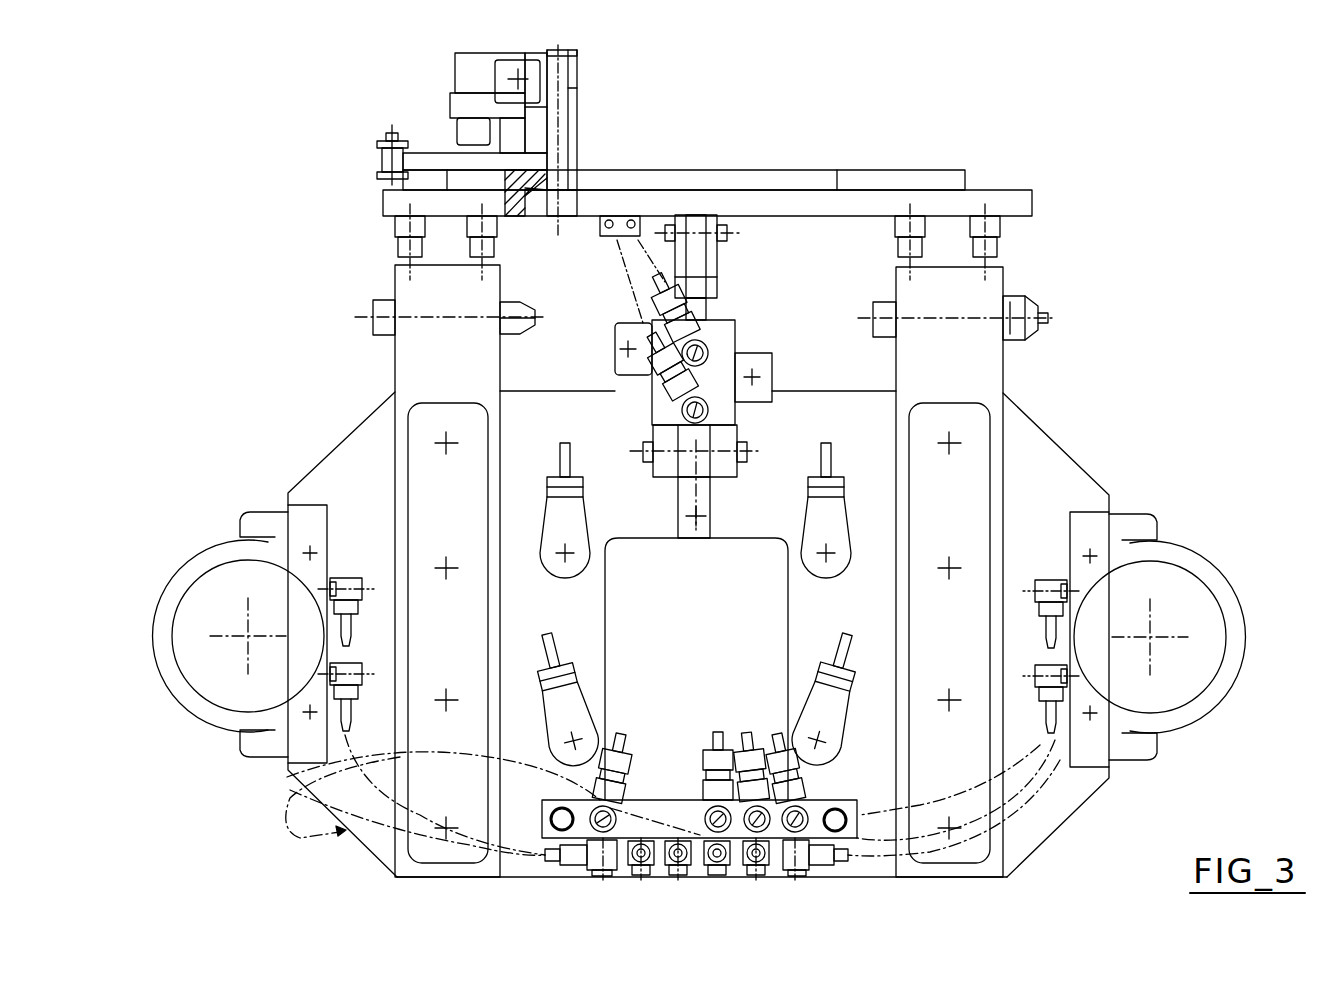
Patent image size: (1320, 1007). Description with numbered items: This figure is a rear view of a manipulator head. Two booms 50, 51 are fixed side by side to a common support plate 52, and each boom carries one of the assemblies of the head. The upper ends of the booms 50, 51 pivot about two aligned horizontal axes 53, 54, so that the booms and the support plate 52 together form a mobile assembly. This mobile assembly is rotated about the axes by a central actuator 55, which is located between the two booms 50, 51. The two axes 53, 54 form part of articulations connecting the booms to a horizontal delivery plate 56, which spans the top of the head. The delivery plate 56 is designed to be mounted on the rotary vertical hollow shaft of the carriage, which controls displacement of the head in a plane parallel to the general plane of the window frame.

The boom 50 is at (438, 347).
The boom 51 is at (958, 352).
The common support plate 52 is at (866, 764).
The horizontal axis 53 is at (438, 311).
The horizontal axis 54 is at (965, 312).
The central actuator 55 is at (722, 368).
The horizontal delivery plate 56 is at (932, 206).